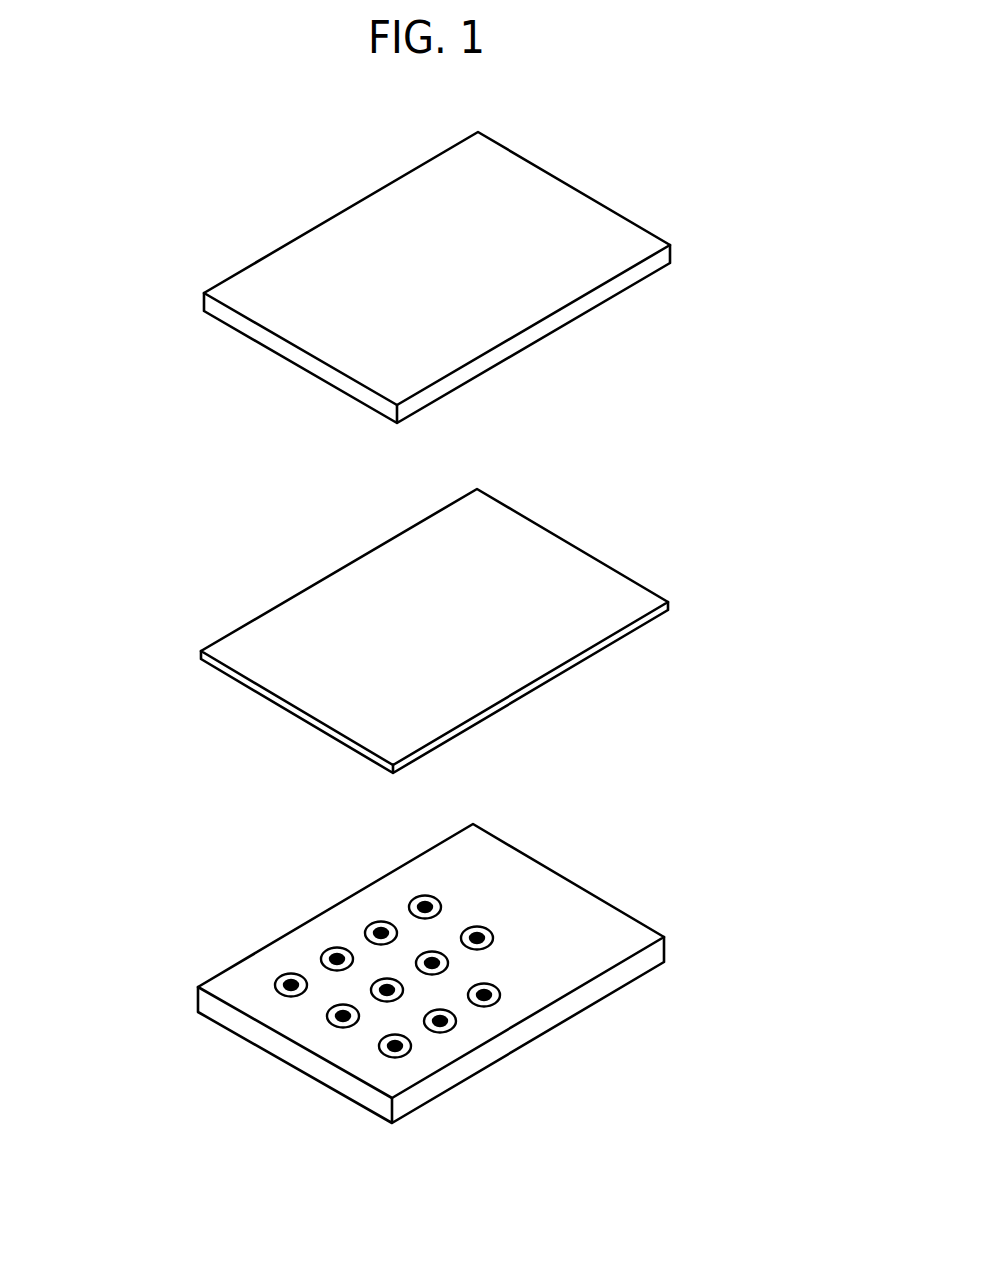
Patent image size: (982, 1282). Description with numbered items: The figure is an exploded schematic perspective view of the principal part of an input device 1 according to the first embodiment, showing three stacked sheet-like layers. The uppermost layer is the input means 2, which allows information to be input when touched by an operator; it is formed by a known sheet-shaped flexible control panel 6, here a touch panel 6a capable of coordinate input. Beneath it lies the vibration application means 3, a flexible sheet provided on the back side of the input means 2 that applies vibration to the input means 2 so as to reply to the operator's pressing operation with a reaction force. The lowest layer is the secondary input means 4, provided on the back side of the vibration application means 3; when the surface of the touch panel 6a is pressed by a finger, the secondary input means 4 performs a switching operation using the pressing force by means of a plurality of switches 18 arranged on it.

The input device 1 is at (188, 463).
The input means 2 is at (577, 187).
The vibration application means 3 is at (577, 547).
The secondary input means 4 is at (572, 880).
The control panel 6 is at (437, 277).
The touch panel 6a is at (529, 263).
The switches 18 is at (288, 980).